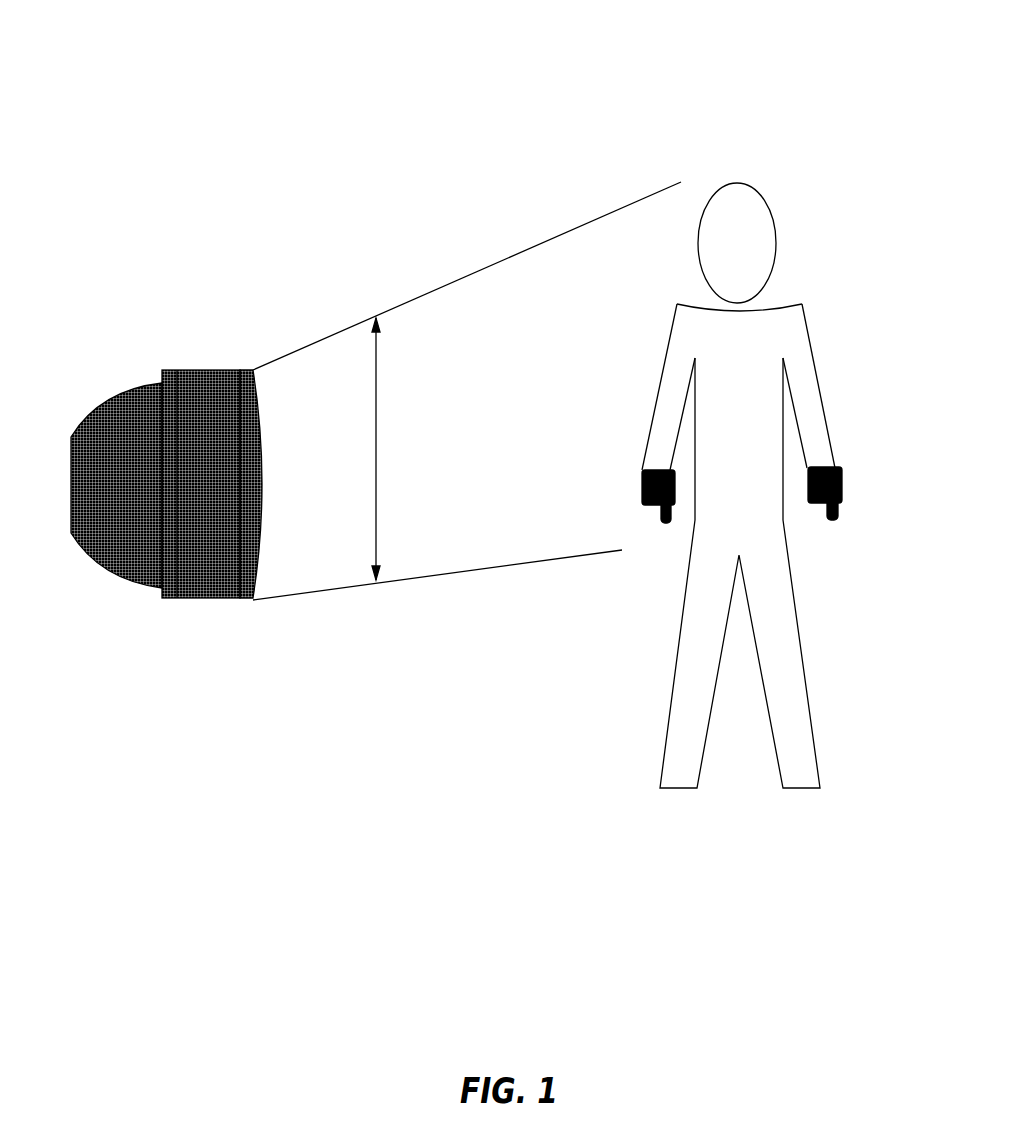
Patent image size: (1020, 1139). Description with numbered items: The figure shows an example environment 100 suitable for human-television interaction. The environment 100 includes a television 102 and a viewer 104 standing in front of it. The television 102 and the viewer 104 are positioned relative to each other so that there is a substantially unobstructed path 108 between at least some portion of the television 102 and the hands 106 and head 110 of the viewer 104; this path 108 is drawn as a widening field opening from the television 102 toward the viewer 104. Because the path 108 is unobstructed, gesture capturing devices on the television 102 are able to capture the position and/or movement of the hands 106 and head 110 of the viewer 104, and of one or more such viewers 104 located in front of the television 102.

The environment 100 is at (504, 70).
The television 102 is at (118, 398).
The viewer 104 is at (773, 342).
The hands 106 is at (644, 484).
The substantially unobstructed path 108 is at (467, 391).
The head 110 is at (767, 200).